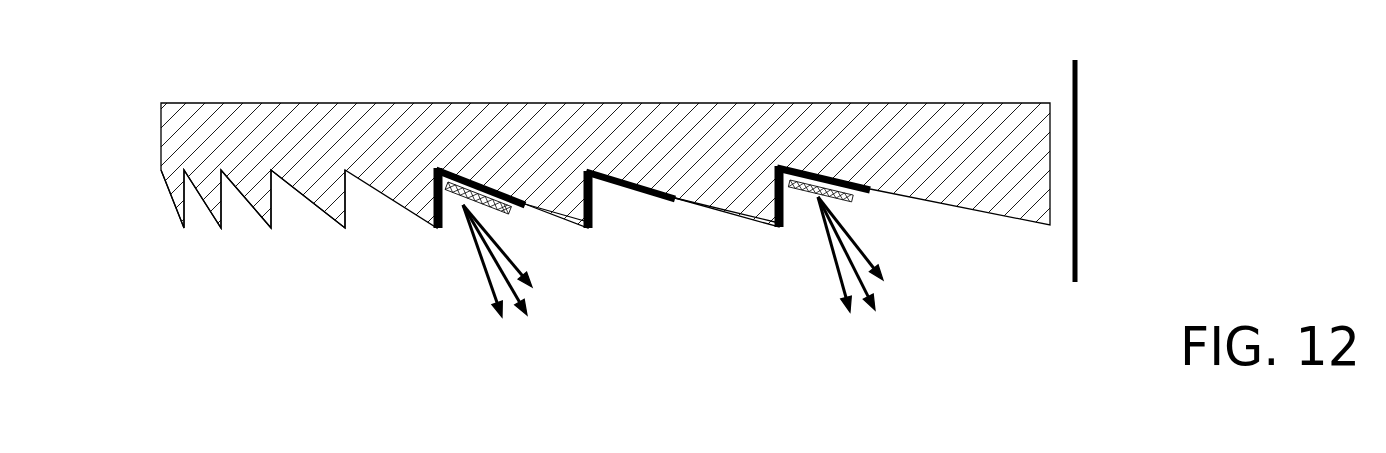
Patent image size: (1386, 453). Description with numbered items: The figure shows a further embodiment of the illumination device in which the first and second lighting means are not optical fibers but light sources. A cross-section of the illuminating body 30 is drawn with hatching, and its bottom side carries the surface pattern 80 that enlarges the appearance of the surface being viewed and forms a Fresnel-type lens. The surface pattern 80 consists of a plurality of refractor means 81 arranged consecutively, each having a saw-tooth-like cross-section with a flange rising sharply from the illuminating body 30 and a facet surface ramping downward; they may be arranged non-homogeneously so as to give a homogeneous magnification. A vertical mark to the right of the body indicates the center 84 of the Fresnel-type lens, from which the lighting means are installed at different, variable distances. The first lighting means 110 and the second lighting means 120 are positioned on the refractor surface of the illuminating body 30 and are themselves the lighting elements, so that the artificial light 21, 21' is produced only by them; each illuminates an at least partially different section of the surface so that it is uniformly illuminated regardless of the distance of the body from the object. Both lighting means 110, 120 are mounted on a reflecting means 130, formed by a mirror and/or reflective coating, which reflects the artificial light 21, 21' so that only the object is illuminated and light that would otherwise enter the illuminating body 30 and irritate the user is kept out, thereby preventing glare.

The illuminating body 30 is at (805, 115).
The surface pattern 80 is at (175, 198).
The refractor means 81 is at (735, 198).
The center of the Fresnel-type lens 84 is at (1078, 152).
The first lighting means 110 is at (462, 188).
The second lighting means 120 is at (832, 193).
The reflecting means 130 is at (640, 193).
The artificial light 21 is at (481, 284).
The artificial light 21' is at (830, 276).